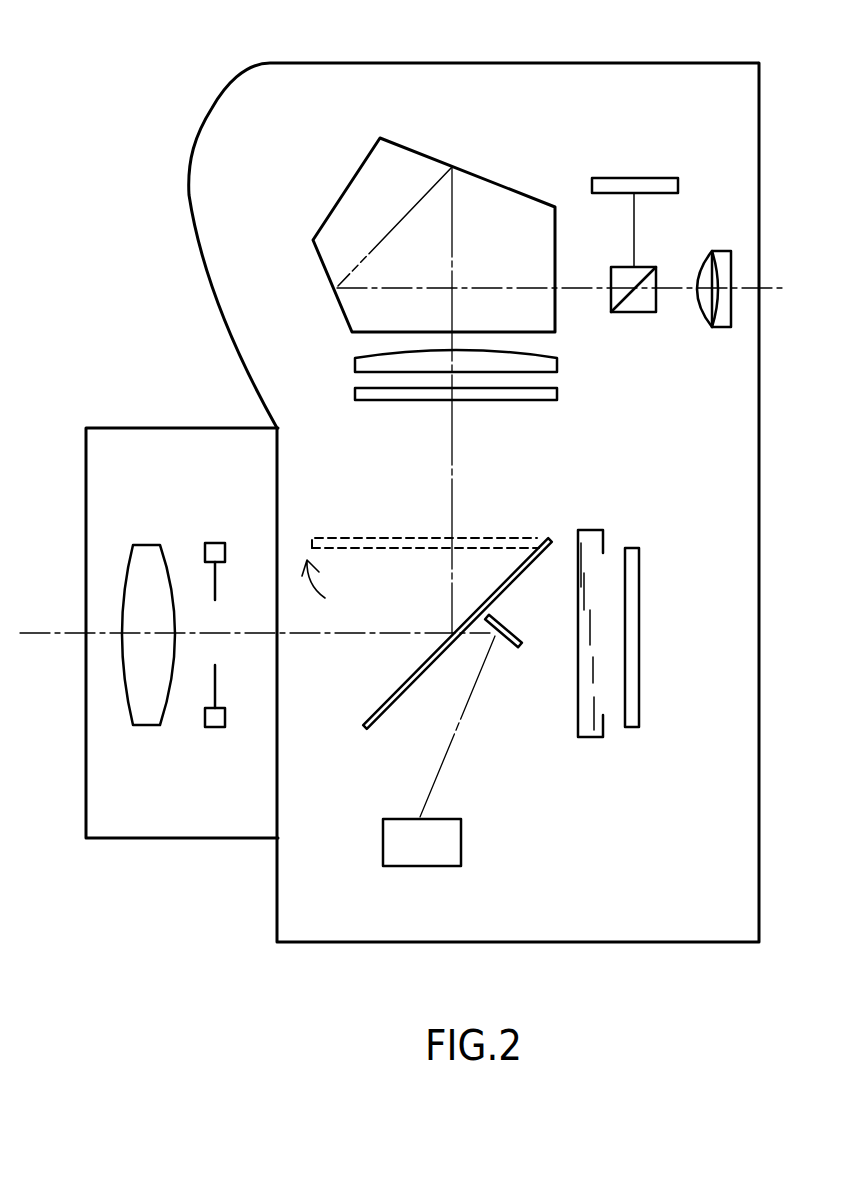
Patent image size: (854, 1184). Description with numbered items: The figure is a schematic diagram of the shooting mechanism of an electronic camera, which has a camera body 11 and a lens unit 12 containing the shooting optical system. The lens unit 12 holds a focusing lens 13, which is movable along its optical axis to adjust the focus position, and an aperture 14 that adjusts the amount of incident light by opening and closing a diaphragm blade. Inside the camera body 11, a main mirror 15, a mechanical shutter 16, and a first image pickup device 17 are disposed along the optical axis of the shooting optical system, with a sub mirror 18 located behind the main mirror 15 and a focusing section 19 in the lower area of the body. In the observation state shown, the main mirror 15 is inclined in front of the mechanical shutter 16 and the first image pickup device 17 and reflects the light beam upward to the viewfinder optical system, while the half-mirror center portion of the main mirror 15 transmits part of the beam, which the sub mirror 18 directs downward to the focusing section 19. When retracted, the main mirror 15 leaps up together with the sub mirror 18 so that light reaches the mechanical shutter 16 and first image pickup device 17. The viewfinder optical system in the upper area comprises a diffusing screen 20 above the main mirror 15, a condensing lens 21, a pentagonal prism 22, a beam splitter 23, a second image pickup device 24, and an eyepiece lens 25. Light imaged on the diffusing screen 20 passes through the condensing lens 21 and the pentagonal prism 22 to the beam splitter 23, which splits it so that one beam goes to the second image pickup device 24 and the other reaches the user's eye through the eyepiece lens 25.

The camera body 11 is at (775, 84).
The lens unit 12 is at (80, 841).
The focusing lens 13 is at (145, 545).
The aperture 14 is at (215, 543).
The main mirror 15 is at (366, 727).
The mechanical shutter 16 is at (578, 735).
The first image pickup device 17 is at (633, 548).
The sub mirror 18 is at (518, 650).
The focusing section 19 is at (461, 840).
The diffusing screen 20 is at (510, 400).
The condensing lens 21 is at (355, 358).
The pentagonal prism 22 is at (352, 178).
The beam splitter 23 is at (626, 313).
The second image pickup device 24 is at (648, 178).
The eyepiece lens 25 is at (720, 328).